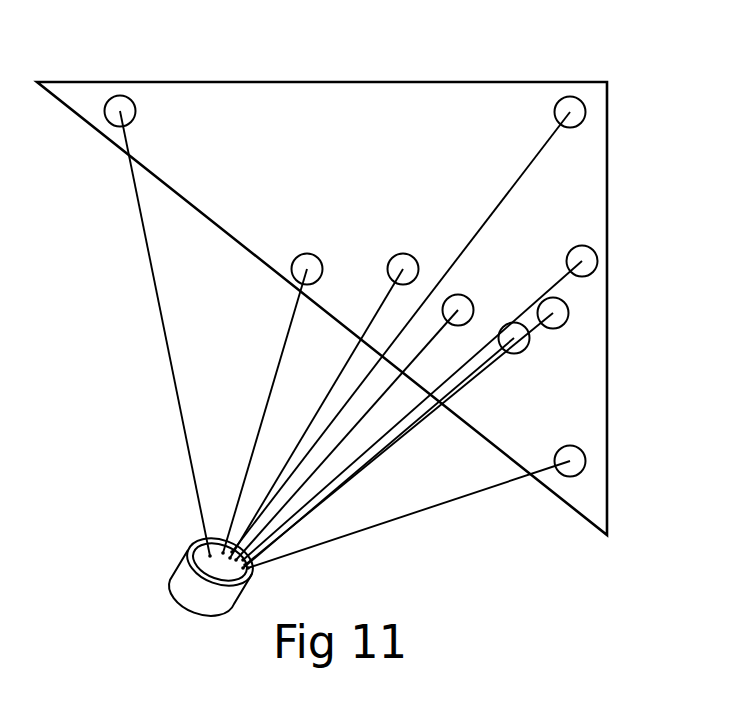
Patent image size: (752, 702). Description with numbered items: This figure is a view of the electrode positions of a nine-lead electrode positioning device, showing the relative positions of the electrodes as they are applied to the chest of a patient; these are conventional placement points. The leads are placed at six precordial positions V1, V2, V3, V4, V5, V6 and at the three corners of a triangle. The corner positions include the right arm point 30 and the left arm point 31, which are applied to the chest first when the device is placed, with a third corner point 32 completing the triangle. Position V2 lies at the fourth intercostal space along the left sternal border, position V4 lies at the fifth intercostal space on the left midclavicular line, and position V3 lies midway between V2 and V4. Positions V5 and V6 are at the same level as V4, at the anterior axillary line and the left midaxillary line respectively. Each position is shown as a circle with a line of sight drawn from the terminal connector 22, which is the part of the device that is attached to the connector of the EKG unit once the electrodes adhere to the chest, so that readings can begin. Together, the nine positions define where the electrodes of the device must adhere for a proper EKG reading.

The terminal connector 22 is at (192, 563).
The right arm point 30 is at (120, 112).
The left arm point 31 is at (571, 110).
The third corner reference point 32 is at (570, 462).
The V1 electrode position V1 is at (307, 269).
The V2 electrode position V2 is at (403, 269).
The V3 electrode position V3 is at (458, 310).
The V4 electrode position V4 is at (514, 338).
The V5 electrode position V5 is at (553, 313).
The V6 electrode position V6 is at (582, 261).